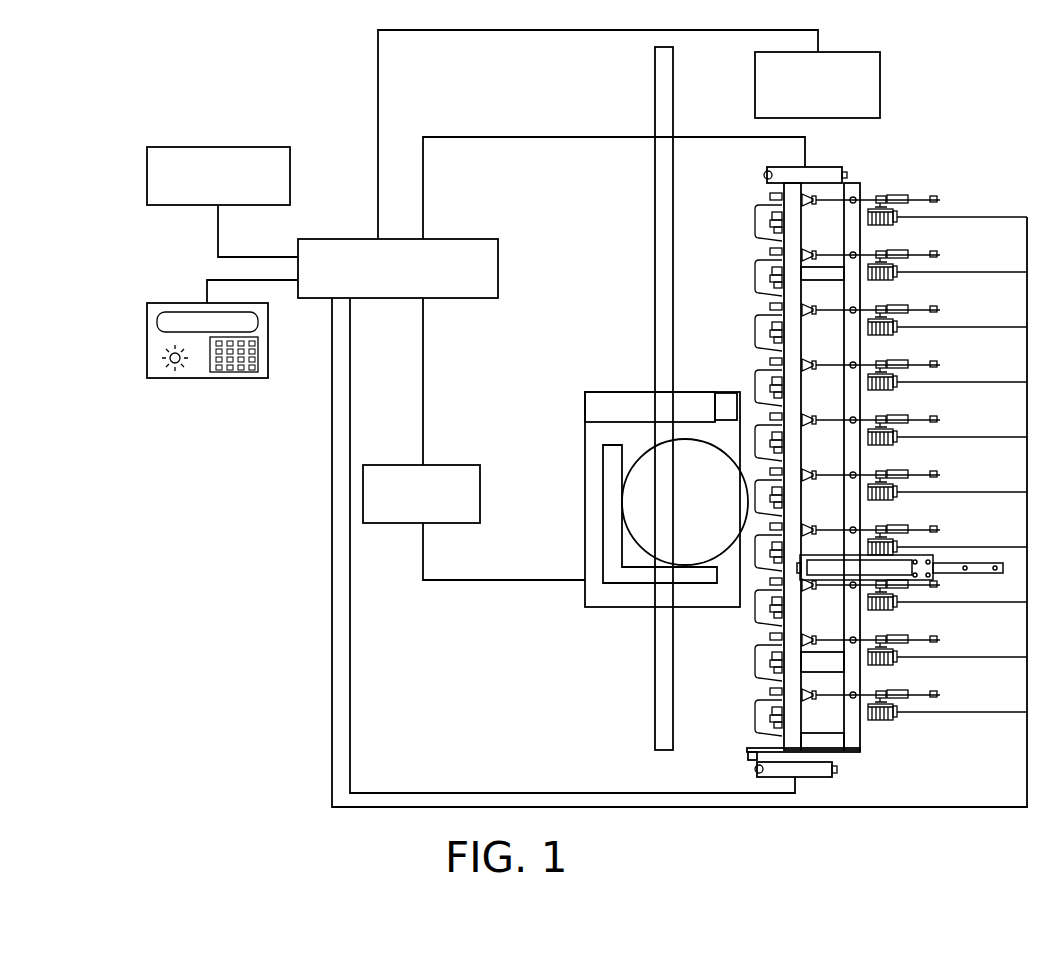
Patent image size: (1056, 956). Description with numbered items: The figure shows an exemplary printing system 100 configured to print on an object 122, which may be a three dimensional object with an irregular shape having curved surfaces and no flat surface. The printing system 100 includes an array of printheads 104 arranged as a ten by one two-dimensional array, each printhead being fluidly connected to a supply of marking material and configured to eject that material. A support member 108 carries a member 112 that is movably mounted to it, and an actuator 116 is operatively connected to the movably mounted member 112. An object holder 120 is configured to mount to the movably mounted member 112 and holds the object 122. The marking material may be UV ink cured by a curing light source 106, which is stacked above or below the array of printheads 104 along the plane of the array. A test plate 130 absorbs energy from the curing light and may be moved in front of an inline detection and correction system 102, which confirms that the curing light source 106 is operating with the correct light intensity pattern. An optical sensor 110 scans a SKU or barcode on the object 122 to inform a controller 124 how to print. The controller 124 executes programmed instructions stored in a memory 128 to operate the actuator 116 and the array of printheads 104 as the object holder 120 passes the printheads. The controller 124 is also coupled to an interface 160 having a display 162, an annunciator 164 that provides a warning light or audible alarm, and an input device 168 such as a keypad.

The printing system 100 is at (238, 70).
The inline detection and correction (IDC) system 102 is at (882, 70).
The array of printheads 104 is at (736, 298).
The curing light source 106 is at (838, 167).
The support member 108 is at (655, 672).
The optical sensor 110 is at (833, 773).
The member 112 is at (585, 557).
The actuator 116 is at (452, 463).
The object holder 120 is at (603, 485).
The object 122 is at (641, 457).
The controller 124 is at (447, 300).
The memory 128 is at (147, 172).
The test plate 130 is at (725, 393).
The interface 160 is at (200, 380).
The display 162 is at (178, 312).
The annunciator 164 is at (168, 363).
The input device 168 is at (243, 372).